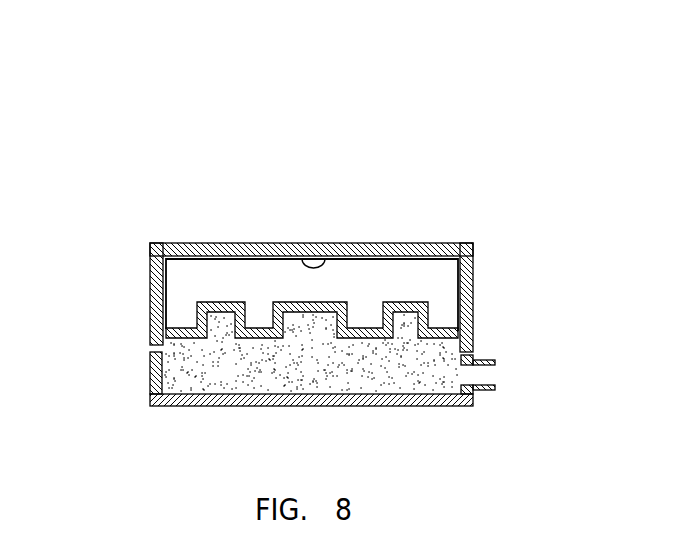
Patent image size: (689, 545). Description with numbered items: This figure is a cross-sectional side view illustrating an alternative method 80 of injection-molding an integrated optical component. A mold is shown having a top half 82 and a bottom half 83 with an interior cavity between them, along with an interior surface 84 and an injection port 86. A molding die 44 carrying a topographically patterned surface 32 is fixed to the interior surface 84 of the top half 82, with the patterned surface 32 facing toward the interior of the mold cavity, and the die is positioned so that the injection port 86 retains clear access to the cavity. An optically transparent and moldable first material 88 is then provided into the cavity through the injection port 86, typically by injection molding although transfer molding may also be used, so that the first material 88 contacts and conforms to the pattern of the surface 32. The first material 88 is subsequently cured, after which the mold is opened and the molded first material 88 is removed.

The method 80 is at (140, 118).
The top half 82 is at (150, 293).
The bottom half 83 is at (150, 385).
The molding die 44 is at (450, 295).
The interior surface 84 is at (303, 258).
The topographically patterned surface 32 is at (355, 340).
The first material 88 is at (375, 378).
The injection port 86 is at (487, 393).